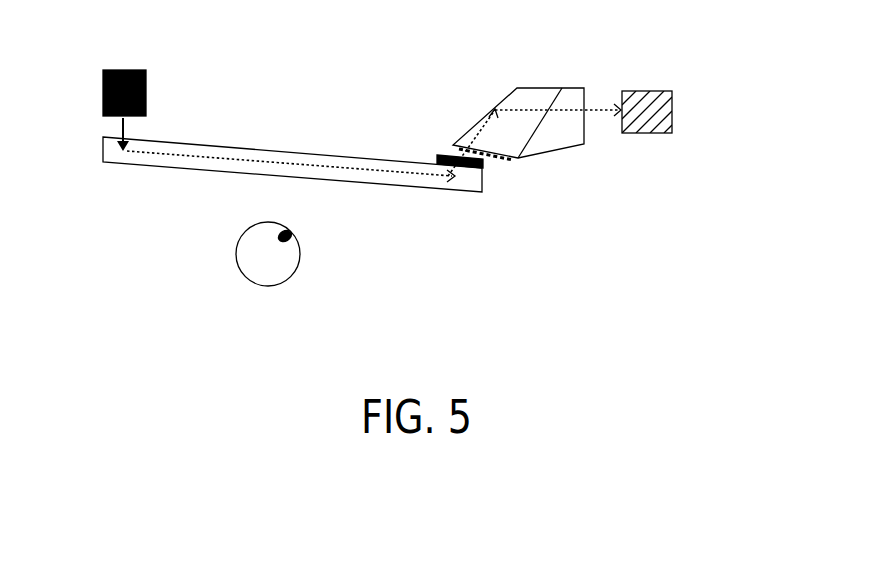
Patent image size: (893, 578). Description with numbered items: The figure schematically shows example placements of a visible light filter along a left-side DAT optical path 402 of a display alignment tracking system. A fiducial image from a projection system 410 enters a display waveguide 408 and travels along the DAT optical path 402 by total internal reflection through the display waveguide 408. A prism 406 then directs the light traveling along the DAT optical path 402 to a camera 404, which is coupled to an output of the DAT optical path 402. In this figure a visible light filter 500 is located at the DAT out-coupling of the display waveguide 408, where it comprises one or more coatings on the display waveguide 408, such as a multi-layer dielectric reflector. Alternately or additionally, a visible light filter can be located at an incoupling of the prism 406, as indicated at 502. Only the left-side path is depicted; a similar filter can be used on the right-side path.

The projection system 410 is at (130, 70).
The display waveguide 408 is at (143, 163).
The DAT optical path 402 is at (415, 173).
The visible light filter 500 is at (440, 156).
The prism 406 is at (548, 88).
The visible light filter at prism incoupling 502 is at (509, 168).
The camera 404 is at (668, 107).